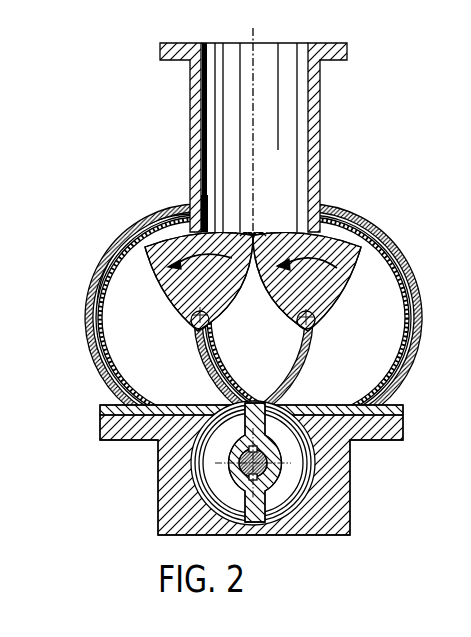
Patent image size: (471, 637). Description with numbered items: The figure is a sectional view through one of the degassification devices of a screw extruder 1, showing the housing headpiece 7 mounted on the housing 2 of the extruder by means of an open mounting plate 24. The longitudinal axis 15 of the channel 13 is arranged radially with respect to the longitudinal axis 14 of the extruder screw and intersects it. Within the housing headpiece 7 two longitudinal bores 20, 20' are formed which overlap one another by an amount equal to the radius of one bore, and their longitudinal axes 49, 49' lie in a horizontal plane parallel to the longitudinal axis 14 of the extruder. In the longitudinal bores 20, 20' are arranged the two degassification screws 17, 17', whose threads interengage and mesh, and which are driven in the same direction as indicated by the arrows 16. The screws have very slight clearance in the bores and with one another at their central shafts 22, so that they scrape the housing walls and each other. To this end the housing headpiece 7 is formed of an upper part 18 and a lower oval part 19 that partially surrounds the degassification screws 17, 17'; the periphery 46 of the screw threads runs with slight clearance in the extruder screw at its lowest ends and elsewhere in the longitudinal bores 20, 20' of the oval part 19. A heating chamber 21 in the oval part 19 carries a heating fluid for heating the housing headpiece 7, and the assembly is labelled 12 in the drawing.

The screw extruder 1 is at (276, 488).
The housing 2 is at (276, 466).
The housing headpiece 7 is at (320, 172).
The inlet 12 is at (166, 198).
The channel 13 is at (297, 117).
The longitudinal axis of the screw 14 is at (268, 462).
The longitudinal axis of channel 15 is at (255, 36).
The arrows 16 is at (262, 235).
The degassification screw 17 is at (318, 318).
The degassification screw 17' is at (181, 318).
The upper part 18 is at (193, 93).
The lower oval part 19 is at (130, 240).
The longitudinal bore 20 is at (322, 318).
The longitudinal bore 20' is at (164, 308).
The heating chamber 21 is at (410, 323).
The central shaft 22 is at (200, 333).
The mounting plate 24 is at (393, 406).
The periphery of the threads 46 is at (202, 200).
The longitudinal axis of bore 49 is at (335, 316).
The longitudinal axis of bore 49' is at (172, 315).